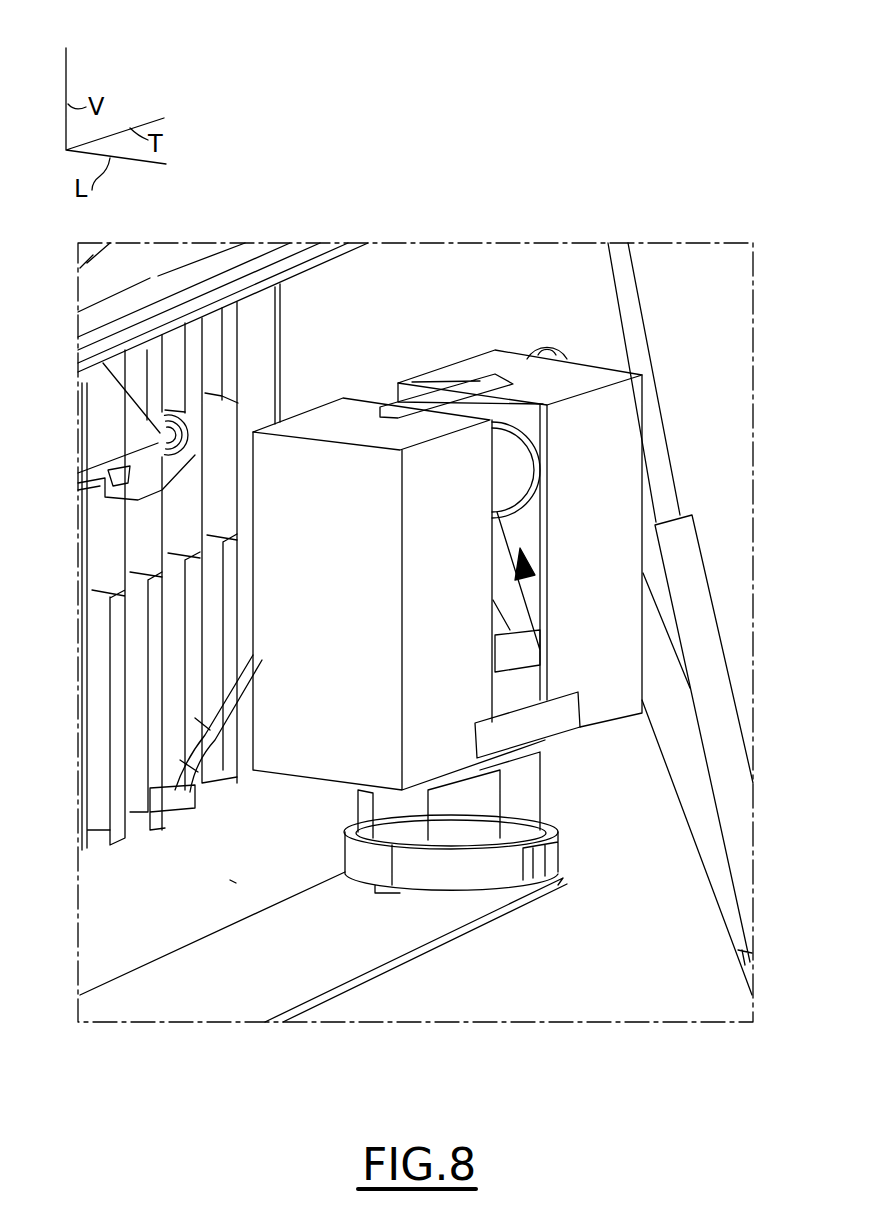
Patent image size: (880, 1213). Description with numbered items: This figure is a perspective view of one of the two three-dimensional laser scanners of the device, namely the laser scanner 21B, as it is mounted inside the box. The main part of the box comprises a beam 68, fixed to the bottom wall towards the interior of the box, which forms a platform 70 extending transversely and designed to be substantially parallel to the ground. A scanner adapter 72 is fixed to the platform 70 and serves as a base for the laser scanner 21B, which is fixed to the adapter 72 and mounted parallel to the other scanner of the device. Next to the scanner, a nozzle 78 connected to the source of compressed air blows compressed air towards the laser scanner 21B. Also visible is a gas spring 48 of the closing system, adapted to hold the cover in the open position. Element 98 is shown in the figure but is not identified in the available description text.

The 3D laser scanner 21B is at (602, 437).
The gas spring 48 is at (640, 327).
The beam 68 is at (232, 982).
The platform 70 is at (270, 950).
The scanner adapter 72 is at (470, 876).
The nozzle 78 is at (192, 726).
The base plate 98 is at (373, 990).